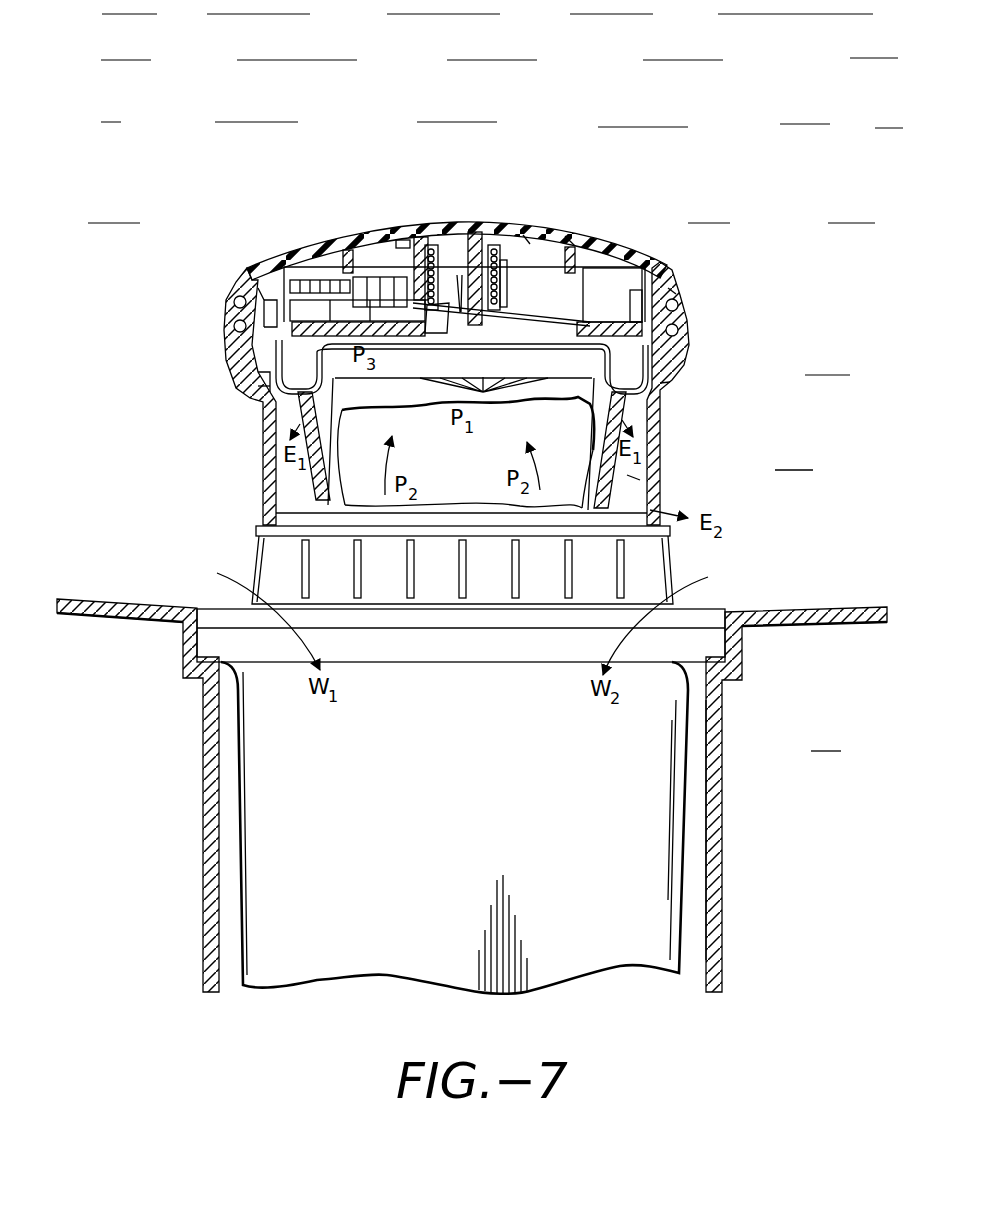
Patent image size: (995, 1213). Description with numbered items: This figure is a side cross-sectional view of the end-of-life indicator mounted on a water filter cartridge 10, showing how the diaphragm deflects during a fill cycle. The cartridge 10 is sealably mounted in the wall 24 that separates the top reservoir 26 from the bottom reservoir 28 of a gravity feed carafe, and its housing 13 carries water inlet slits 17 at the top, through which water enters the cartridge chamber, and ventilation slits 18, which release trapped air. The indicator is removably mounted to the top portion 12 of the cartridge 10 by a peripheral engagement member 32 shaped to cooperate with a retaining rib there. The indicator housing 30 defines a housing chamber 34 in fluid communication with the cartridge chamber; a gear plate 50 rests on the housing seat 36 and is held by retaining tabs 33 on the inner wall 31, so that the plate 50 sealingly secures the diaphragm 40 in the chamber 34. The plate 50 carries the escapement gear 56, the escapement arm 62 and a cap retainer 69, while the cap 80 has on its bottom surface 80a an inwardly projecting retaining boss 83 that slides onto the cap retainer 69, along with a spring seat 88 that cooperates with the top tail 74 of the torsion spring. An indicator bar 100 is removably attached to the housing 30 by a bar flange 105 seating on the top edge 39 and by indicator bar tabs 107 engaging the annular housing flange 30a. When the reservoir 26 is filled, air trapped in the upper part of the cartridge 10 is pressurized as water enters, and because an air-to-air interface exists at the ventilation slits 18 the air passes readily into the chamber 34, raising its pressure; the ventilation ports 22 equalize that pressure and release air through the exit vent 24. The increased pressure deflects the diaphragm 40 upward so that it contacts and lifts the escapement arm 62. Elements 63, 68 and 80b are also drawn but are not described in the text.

The filter cartridge 10 is at (688, 804).
The top portion 12 is at (623, 508).
The housing 13 is at (276, 801).
The water inlet slits 17 is at (303, 575).
The ventilation slits 18 is at (492, 372).
The ventilation ports 22 is at (316, 408).
The exit vent 24 is at (810, 628).
The top reservoir 26 is at (783, 472).
The bottom reservoir 28 is at (813, 753).
The housing 30 is at (266, 472).
The annular housing flange 30a is at (670, 383).
The inner wall 31 is at (678, 303).
The peripheral engagement member 32 is at (628, 475).
The retaining tabs 33 is at (678, 328).
The housing chamber 34 is at (589, 369).
The housing seat 36 is at (236, 370).
The top edge 39 is at (672, 292).
The diaphragm 40 is at (533, 334).
The gear plate 50 is at (617, 320).
The escapement gear 56 is at (372, 285).
The escapement arm 62 is at (448, 300).
The post 63 is at (420, 313).
The spring 68 is at (505, 284).
The cap retainer 69 is at (482, 245).
The top tail 74 is at (430, 247).
The cap 80 is at (298, 250).
The bottom surface 80a is at (523, 236).
The dome cover section 80b is at (570, 238).
The retaining boss 83 is at (454, 300).
The spring seat 88 is at (403, 242).
The indicator bar 100 is at (234, 295).
The bar flange 105 is at (240, 286).
The indicator bar tabs 107 is at (246, 388).